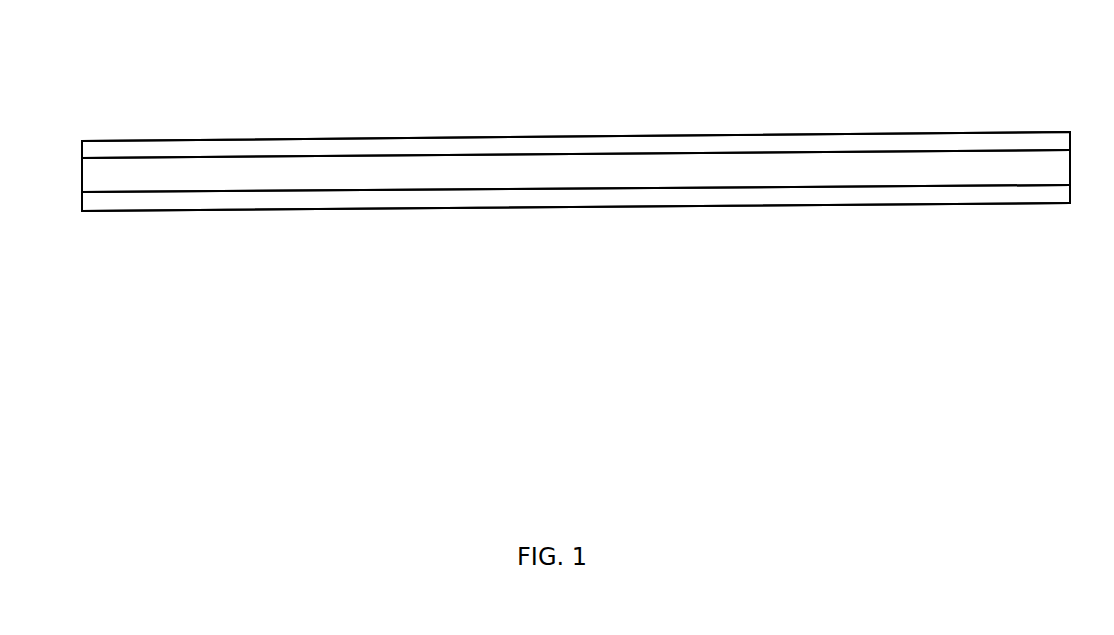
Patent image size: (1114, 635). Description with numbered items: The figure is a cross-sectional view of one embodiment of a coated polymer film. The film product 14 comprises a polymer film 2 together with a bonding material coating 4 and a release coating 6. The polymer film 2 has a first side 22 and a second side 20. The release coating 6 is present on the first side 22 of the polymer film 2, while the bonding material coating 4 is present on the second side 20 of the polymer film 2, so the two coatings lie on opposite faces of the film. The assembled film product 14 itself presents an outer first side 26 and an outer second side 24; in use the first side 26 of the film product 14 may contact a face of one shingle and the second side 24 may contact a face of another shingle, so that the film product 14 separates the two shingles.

The polymer film 2 is at (242, 177).
The bonding material coating 4 is at (129, 150).
The release coating 6 is at (151, 202).
The film product 14 is at (552, 115).
The second side 20 is at (1025, 149).
The first side 22 is at (1023, 186).
The second side 24 is at (748, 135).
The first side 26 is at (776, 206).